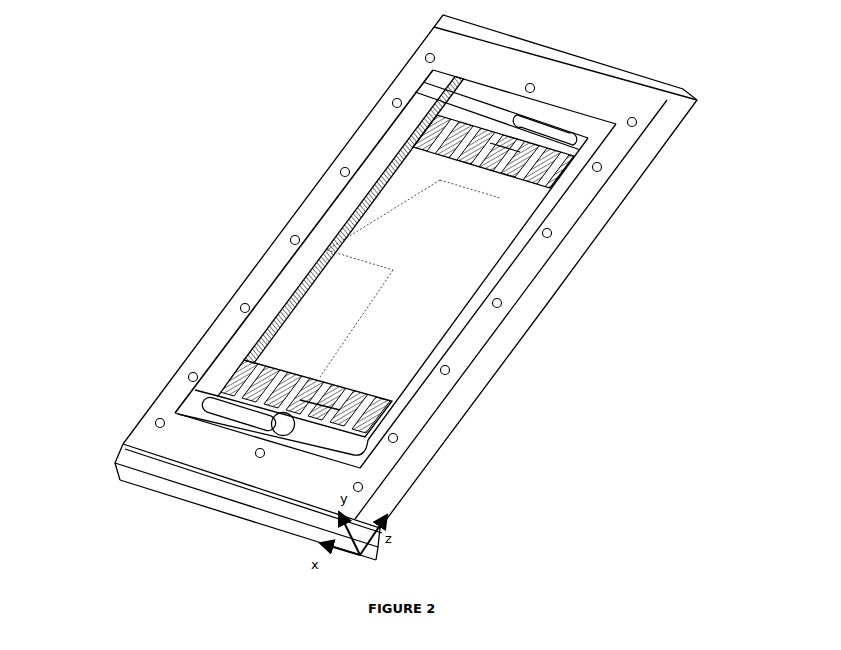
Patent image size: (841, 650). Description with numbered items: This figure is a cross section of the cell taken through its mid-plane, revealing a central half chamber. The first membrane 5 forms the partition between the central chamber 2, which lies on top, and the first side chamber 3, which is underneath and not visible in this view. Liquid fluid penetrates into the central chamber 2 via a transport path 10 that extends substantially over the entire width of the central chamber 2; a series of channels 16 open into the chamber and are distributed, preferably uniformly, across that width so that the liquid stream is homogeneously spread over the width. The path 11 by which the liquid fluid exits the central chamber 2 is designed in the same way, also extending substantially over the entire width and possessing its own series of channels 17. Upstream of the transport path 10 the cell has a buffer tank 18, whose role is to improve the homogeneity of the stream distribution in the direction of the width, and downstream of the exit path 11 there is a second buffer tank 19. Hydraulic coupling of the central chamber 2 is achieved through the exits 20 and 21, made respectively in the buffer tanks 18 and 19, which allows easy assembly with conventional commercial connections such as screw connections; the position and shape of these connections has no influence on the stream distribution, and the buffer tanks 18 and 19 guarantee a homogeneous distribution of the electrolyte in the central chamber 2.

The central chamber 2 is at (383, 237).
The first side chamber 3 is at (483, 388).
The first membrane 5 is at (427, 278).
The path 10 is at (320, 407).
The path 11 is at (503, 155).
The channels 16 is at (260, 380).
The channels 17 is at (442, 140).
The buffer tank 18 is at (237, 410).
The buffer tank 19 is at (460, 112).
The exit 20 is at (291, 431).
The exit 21 is at (513, 127).